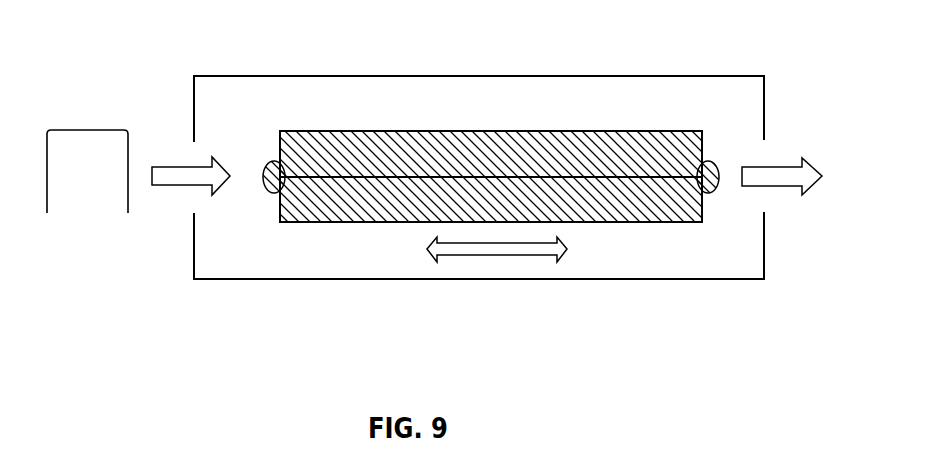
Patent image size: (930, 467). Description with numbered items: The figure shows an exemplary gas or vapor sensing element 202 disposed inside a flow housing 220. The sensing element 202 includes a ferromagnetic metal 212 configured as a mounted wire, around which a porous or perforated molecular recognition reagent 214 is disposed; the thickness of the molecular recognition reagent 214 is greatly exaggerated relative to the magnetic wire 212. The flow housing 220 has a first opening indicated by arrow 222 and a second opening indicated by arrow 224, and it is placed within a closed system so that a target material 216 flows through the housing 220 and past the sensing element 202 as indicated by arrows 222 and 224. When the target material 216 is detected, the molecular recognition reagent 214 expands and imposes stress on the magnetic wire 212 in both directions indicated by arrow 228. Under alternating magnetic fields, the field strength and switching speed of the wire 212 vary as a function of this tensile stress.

The sensing element 202 is at (653, 242).
The ferromagnetic metal 212 is at (465, 177).
The molecular recognition reagent 214 is at (623, 145).
The target material 216 is at (80, 130).
The flow housing 220 is at (323, 76).
The first opening 222 is at (170, 187).
The second opening 224 is at (787, 186).
The arrow indicating stress directions 228 is at (506, 257).